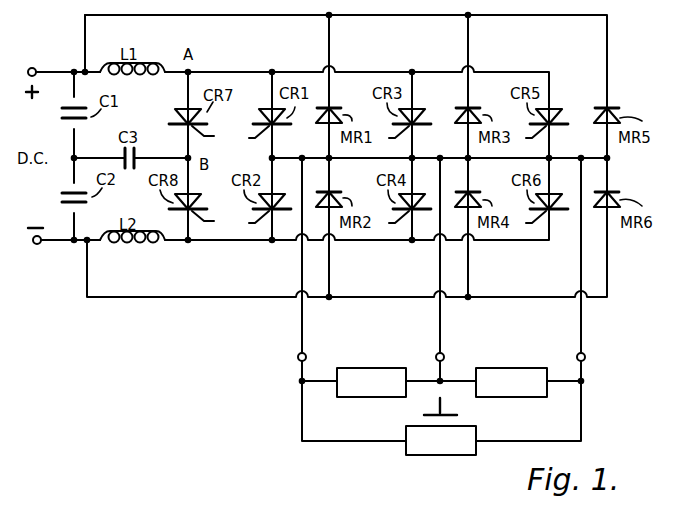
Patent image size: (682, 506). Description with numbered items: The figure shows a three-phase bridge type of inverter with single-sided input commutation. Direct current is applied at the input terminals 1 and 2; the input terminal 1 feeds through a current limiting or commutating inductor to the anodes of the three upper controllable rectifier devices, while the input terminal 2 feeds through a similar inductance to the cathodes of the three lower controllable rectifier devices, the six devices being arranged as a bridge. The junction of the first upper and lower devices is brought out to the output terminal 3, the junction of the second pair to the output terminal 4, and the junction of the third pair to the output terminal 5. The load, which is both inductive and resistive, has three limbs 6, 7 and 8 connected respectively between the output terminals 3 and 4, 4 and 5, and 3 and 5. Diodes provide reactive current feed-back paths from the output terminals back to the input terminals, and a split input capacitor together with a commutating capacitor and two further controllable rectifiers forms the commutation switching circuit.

The input terminal 1 is at (33, 62).
The input terminal 2 is at (37, 250).
The output terminal 3 is at (306, 352).
The output terminal 4 is at (444, 352).
The output terminal 5 is at (585, 352).
The load limb 6 is at (366, 377).
The load limb 7 is at (518, 377).
The load limb 8 is at (446, 445).